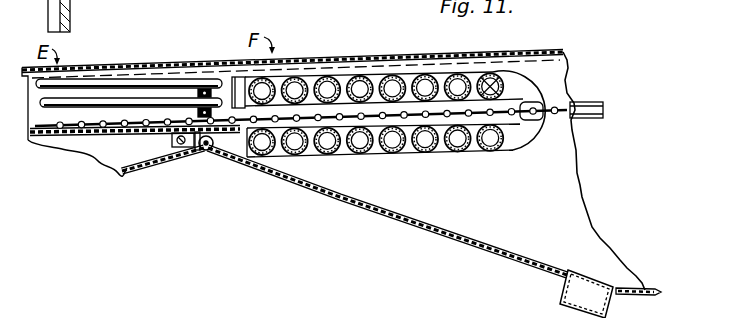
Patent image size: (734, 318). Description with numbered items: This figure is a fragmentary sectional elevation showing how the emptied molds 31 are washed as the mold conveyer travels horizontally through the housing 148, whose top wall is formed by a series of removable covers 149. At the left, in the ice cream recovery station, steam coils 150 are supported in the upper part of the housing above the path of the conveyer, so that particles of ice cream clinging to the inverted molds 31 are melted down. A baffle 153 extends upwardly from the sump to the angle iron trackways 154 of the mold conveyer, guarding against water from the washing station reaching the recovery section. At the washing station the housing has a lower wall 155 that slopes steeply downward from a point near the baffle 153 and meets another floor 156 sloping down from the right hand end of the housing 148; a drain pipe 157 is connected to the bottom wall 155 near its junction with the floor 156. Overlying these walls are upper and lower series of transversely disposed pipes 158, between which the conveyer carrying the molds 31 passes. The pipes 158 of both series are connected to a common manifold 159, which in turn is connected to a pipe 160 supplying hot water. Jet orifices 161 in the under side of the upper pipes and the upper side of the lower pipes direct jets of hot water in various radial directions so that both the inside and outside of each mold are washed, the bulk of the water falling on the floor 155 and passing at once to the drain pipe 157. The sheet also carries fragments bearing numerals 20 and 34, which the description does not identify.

The frame 20 is at (90, 140).
The molds 31 is at (378, 157).
The member 34 is at (42, 16).
The housing 148 is at (577, 182).
The removable top wall sections or covers 149 is at (108, 67).
The steam coils 150 is at (173, 110).
The baffle 153 is at (205, 152).
The angle iron trackways 154 is at (150, 165).
The lower wall 155 is at (432, 231).
The floor 156 is at (645, 290).
The drain pipe 157 is at (578, 284).
The pipes 158 is at (362, 76).
The common manifold 159 is at (519, 150).
The pipe 160 is at (605, 110).
The jet orifices 161 is at (494, 76).